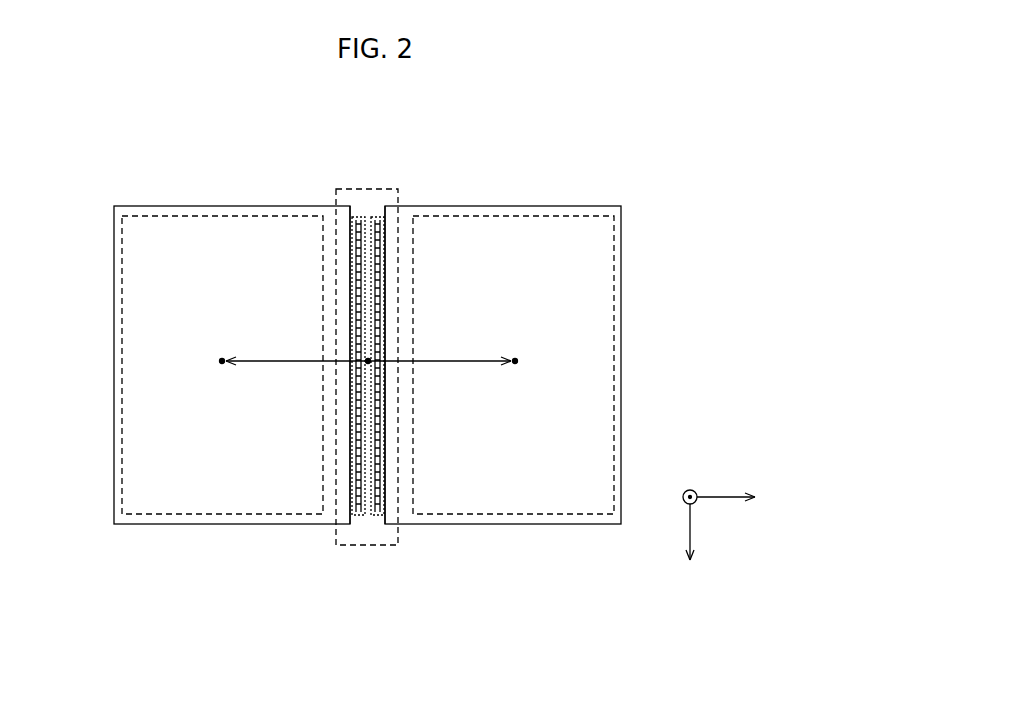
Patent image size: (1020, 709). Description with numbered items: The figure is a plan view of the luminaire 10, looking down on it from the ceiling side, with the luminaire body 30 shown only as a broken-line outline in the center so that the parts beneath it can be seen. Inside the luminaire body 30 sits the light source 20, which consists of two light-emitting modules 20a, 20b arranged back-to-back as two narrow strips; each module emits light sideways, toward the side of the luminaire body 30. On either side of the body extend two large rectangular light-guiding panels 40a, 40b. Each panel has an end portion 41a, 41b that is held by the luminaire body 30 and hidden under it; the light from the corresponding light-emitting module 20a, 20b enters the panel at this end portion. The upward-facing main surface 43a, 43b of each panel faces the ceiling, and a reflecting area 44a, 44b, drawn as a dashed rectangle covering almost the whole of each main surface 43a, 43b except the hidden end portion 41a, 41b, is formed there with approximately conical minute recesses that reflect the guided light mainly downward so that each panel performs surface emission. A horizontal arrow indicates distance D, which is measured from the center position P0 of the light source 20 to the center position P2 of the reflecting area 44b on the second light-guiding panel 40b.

The luminaire 10 is at (650, 146).
The light source 20 is at (425, 598).
The light-emitting module 20a is at (374, 515).
The light-emitting module 20b is at (362, 515).
The luminaire body 30 is at (372, 189).
The light-guiding panel 40a is at (578, 206).
The light-guiding panel 40b is at (160, 206).
The end portion 41a is at (388, 493).
The end portion 41b is at (345, 493).
The main surface 43a is at (492, 523).
The main surface 43b is at (205, 524).
The reflecting area 44a is at (578, 515).
The reflecting area 44b is at (133, 518).
The distance D is at (280, 358).
The center position P0 is at (368, 365).
The center position P2 is at (220, 358).